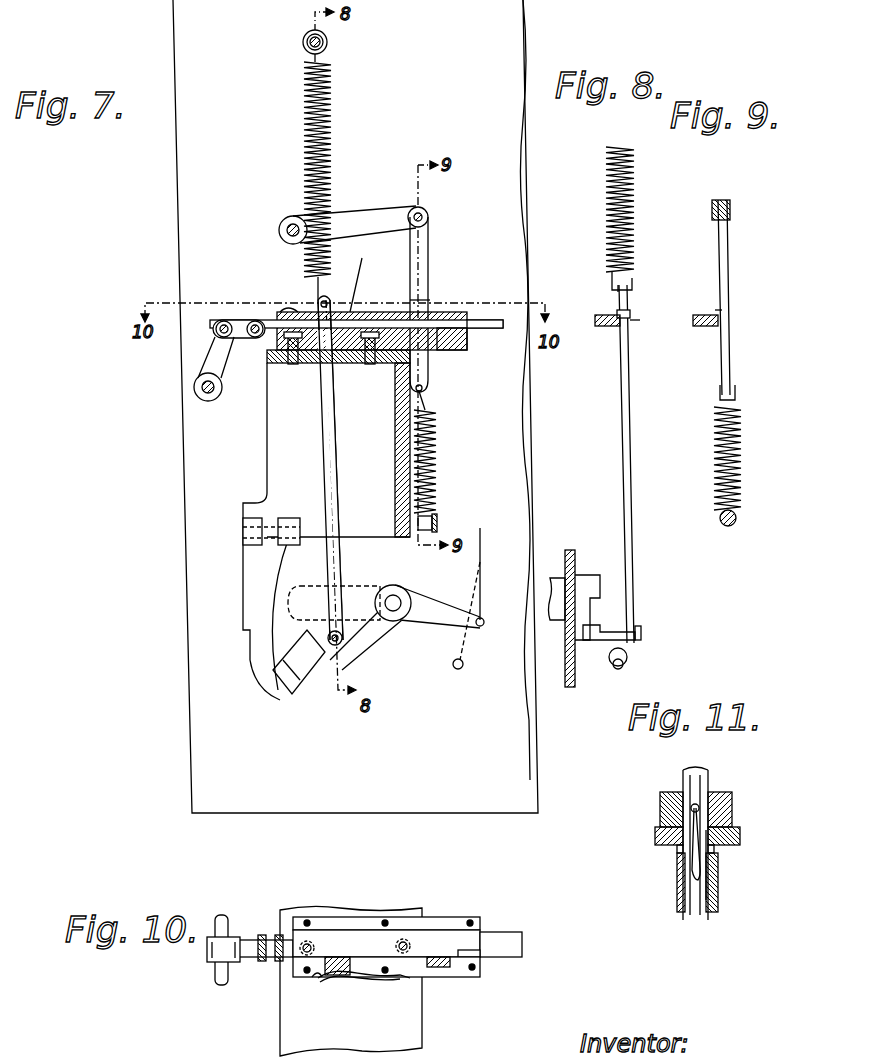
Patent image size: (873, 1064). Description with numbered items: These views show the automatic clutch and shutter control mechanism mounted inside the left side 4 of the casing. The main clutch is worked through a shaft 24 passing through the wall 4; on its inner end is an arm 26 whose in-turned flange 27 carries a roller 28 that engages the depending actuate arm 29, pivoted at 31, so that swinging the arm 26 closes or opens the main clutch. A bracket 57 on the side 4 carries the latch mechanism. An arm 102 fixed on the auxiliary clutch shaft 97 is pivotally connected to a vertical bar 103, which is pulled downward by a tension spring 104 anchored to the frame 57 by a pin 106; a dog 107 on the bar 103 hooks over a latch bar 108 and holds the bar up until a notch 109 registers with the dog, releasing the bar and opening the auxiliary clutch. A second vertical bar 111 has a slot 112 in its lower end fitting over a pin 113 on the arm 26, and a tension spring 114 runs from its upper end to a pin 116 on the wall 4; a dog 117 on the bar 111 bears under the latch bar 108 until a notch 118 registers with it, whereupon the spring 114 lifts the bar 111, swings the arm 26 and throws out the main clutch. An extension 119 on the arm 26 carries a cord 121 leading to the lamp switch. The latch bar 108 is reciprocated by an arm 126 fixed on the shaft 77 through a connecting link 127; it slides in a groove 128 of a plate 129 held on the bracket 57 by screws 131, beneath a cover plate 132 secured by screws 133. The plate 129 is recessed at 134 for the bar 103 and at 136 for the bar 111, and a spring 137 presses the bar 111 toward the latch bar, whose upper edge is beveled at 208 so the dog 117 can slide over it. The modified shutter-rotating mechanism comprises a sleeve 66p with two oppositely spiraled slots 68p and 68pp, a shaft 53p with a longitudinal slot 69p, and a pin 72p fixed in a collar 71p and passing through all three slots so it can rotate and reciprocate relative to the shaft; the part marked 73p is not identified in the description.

In FIG. 7, the left side 4 is at (505, 12).
In FIG. 8, the shaft 24 is at (595, 578).
In FIG. 7, the arm 26 is at (372, 592).
In FIG. 8, the arm 26 is at (600, 617).
In FIG. 8, the flange 27 is at (596, 662).
In FIG. 7, the roller 28 is at (278, 674).
In FIG. 8, the roller 28 is at (628, 657).
In FIG. 7, the actuate arm 29 is at (256, 566).
In FIG. 7, the pivot 31 is at (243, 535).
In FIG. 7, the bracket 57 is at (395, 437).
In FIG. 7, the shaft 77 is at (209, 401).
In FIG. 10, the shaft 77 is at (218, 915).
In FIG. 7, the auxiliary clutch shaft 97 is at (282, 220).
In FIG. 7, the arm 102 is at (375, 212).
In FIG. 9, the arm 102 is at (712, 213).
In FIG. 7, the vertical bar 103 is at (430, 252).
In FIG. 9, the vertical bar 103 is at (728, 232).
In FIG. 10, the vertical bar 103 is at (435, 972).
In FIG. 7, the tension spring 104 is at (438, 462).
In FIG. 9, the tension spring 104 is at (712, 478).
In FIG. 7, the pin 106 is at (440, 522).
In FIG. 9, the pin 106 is at (732, 526).
In FIG. 7, the dog 107 is at (434, 302).
In FIG. 9, the dog 107 is at (715, 310).
In FIG. 7, the latch bar 108 is at (500, 335).
In FIG. 8, the latch bar 108 is at (595, 318).
In FIG. 9, the latch bar 108 is at (702, 327).
In FIG. 10, the latch bar 108 is at (523, 945).
In FIG. 7, the notch 109 is at (496, 320).
In FIG. 10, the notch 109 is at (490, 947).
In FIG. 7, the vertical bar 111 is at (326, 470).
In FIG. 8, the vertical bar 111 is at (619, 455).
In FIG. 10, the vertical bar 111 is at (330, 978).
In FIG. 7, the slot 112 is at (300, 608).
In FIG. 7, the pin 113 is at (343, 642).
In FIG. 8, the pin 113 is at (643, 632).
In FIG. 7, the tension spring 114 is at (303, 128).
In FIG. 8, the tension spring 114 is at (605, 177).
In FIG. 7, the pin 116 is at (327, 42).
In FIG. 7, the dog 117 is at (338, 302).
In FIG. 8, the dog 117 is at (618, 327).
In FIG. 7, the notch 118 is at (266, 330).
In FIG. 8, the notch 118 is at (610, 312).
In FIG. 10, the notch 118 is at (348, 930).
In FIG. 7, the extension 119 is at (432, 618).
In FIG. 7, the cord 121 is at (483, 553).
In FIG. 7, the arm 126 is at (204, 368).
In FIG. 10, the arm 126 is at (232, 937).
In FIG. 7, the connecting link 127 is at (226, 318).
In FIG. 10, the connecting link 127 is at (262, 935).
In FIG. 10, the groove 128 is at (478, 932).
In FIG. 10, the plate 129 is at (458, 915).
In FIG. 7, the screws 131 is at (370, 365).
In FIG. 7, the cover plate 132 is at (382, 311).
In FIG. 7, the screws 133 is at (296, 312).
In FIG. 10, the recess 134 is at (452, 968).
In FIG. 10, the recess 136 is at (338, 977).
In FIG. 10, the spring 137 is at (395, 980).
In FIG. 7, the bevel 208 is at (371, 273).
In FIG. 8, the bevel 208 is at (631, 320).
In FIG. 11, the shaft 53p is at (708, 772).
In FIG. 11, the sleeve 66p is at (715, 912).
In FIG. 11, the spiral slot 68p is at (677, 862).
In FIG. 11, the spiral slot 68pp is at (712, 866).
In FIG. 11, the longitudinal slot 69p is at (680, 856).
In FIG. 11, the collar 71p is at (732, 800).
In FIG. 11, the pin 72p is at (692, 810).
In FIG. 11, the flange 73' 73p is at (740, 835).